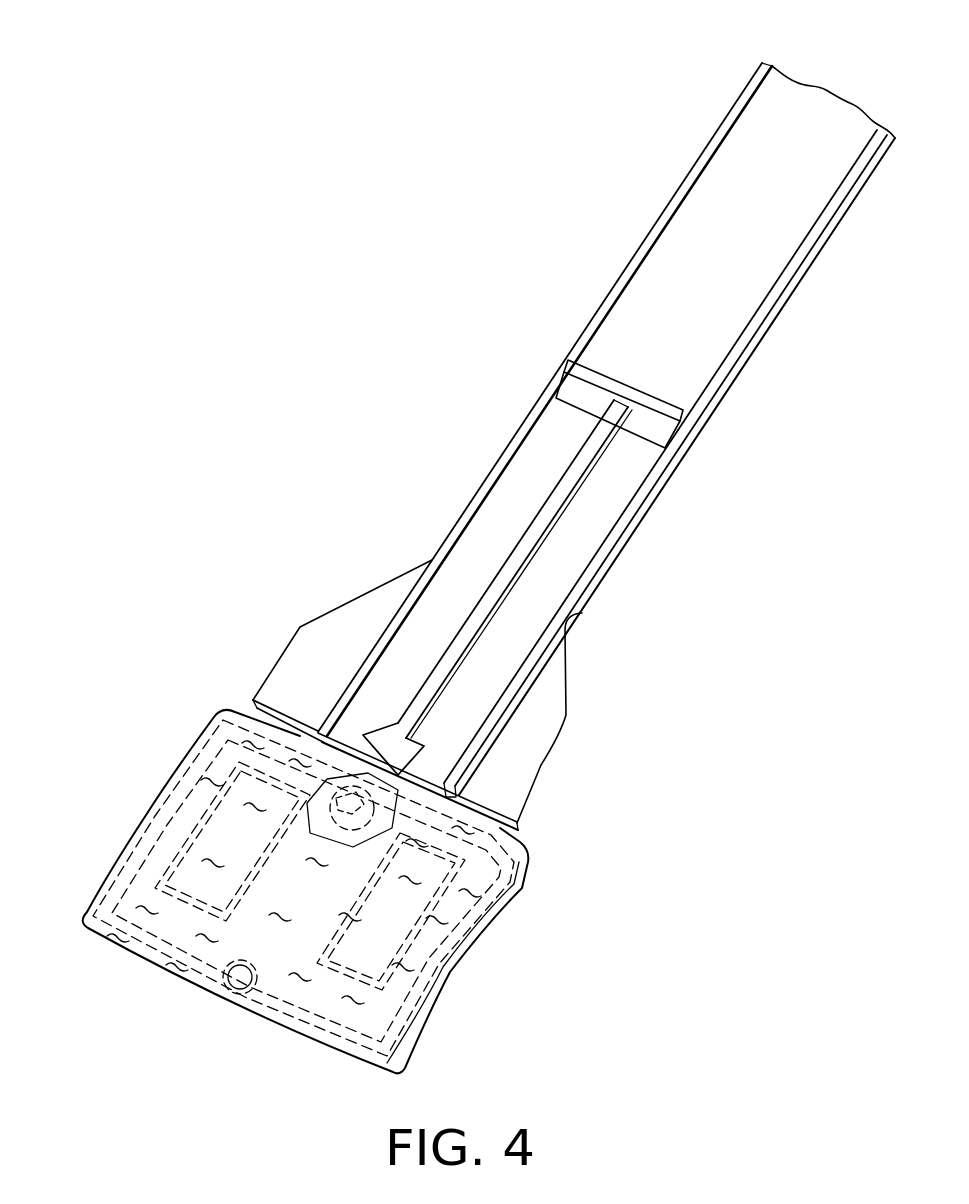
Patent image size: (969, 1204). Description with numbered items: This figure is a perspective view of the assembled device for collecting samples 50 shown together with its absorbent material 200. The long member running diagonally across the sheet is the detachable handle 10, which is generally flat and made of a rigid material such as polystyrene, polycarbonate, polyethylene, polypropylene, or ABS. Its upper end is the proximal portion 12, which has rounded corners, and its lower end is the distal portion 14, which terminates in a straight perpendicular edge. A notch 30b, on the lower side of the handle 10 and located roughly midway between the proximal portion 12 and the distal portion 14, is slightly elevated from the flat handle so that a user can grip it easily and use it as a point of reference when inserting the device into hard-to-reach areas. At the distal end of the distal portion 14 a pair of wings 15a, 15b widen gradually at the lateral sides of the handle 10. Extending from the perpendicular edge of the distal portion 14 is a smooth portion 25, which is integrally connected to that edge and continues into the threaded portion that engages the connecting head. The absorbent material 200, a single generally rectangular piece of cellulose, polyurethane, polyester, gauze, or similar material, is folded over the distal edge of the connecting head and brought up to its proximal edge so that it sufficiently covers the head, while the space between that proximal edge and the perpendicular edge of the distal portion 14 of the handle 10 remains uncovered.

The detachable handle 10 is at (541, 267).
The proximal portion 12 is at (756, 245).
The distal portion 14 is at (493, 520).
The wing 15a is at (320, 664).
The wing 15b is at (512, 750).
The smooth portion 25 is at (386, 748).
The notch 30b is at (654, 403).
The device for collecting samples 50 is at (134, 526).
The absorbent material 200 is at (437, 972).